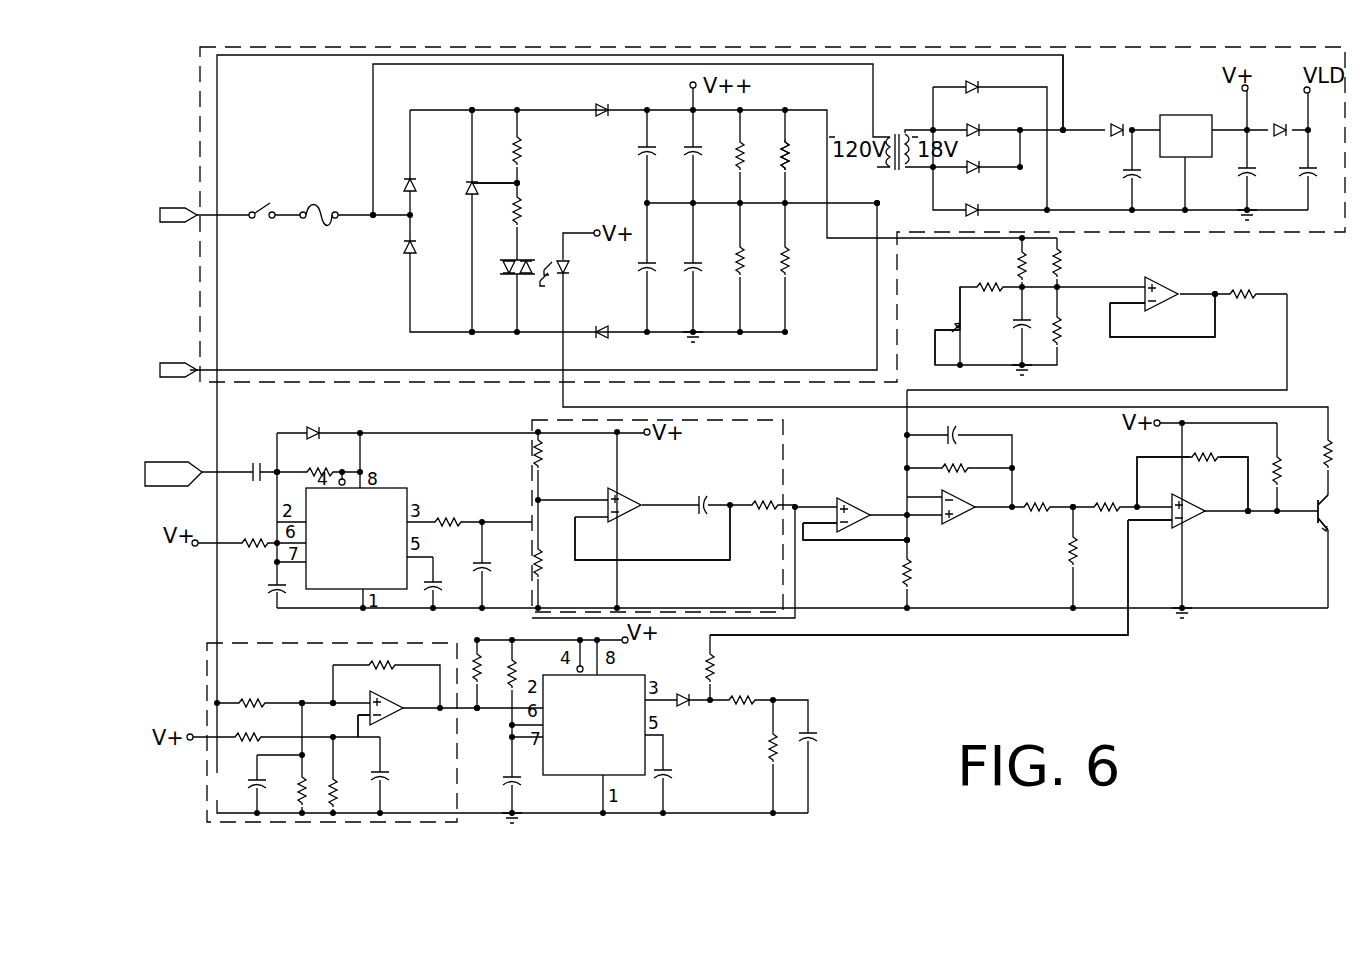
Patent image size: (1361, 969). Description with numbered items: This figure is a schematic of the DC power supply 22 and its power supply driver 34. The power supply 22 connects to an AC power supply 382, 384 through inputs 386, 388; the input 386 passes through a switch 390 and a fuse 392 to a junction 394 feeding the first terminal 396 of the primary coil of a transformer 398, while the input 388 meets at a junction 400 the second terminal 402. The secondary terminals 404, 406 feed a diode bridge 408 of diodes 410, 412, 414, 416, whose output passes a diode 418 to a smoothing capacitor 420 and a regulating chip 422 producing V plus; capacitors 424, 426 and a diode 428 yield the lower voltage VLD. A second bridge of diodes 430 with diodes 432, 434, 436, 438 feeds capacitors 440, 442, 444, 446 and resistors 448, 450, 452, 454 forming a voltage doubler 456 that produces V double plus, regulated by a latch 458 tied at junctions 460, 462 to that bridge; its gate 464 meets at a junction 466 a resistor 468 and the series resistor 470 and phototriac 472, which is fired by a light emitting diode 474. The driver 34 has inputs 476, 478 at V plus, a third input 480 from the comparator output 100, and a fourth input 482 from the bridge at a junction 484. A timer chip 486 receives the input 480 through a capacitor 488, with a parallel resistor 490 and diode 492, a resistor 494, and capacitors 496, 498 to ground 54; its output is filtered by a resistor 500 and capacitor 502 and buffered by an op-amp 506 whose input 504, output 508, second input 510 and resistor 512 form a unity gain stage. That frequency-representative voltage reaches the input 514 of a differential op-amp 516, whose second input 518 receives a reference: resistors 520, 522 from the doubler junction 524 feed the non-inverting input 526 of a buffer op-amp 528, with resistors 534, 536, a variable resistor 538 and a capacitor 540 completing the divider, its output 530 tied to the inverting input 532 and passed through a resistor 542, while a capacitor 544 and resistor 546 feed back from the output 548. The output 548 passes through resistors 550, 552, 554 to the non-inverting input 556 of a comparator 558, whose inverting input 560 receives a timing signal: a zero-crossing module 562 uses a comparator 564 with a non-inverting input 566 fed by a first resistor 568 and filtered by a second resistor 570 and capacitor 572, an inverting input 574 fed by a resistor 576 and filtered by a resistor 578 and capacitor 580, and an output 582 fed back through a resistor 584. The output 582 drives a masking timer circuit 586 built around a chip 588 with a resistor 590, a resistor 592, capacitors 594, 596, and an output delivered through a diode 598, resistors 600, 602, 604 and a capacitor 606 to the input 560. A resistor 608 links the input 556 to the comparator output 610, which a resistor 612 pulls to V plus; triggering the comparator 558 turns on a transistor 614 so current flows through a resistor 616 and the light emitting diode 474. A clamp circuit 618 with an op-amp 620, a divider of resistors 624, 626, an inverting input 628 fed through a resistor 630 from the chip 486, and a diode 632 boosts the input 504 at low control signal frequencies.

The power supply 22 is at (1220, 240).
The power supply driver 34 is at (1143, 680).
The ground 54 is at (1190, 613).
The output of the comparator 100 is at (176, 462).
The AC power supply line 382 is at (140, 215).
The AC power supply line 384 is at (140, 370).
The input 386 is at (192, 212).
The second input 388 is at (187, 368).
The switch 390 is at (264, 204).
The fuse 392 is at (318, 204).
The junction 394 is at (372, 223).
The first terminal of the primary coil 396 is at (872, 113).
The transformer 398 is at (887, 121).
The junction 400 is at (877, 203).
The second terminal of the primary coil 402 is at (877, 187).
The first terminal of the secondary coil 404 is at (915, 130).
The second terminal of the secondary coil 406 is at (885, 178).
The diode bridge 408 is at (1063, 72).
The diode 410 is at (977, 88).
The diode 412 is at (977, 128).
The diode 414 is at (977, 164).
The diode 416 is at (978, 210).
The diode 418 is at (1114, 130).
The capacitor 420 is at (1125, 174).
The chip 422 is at (1188, 115).
The capacitor 424 is at (1252, 174).
The capacitor 426 is at (1305, 180).
The diode 428 is at (1274, 124).
The second bridge of diodes 430 is at (520, 108).
The diode 432 is at (413, 180).
The diode 434 is at (412, 249).
The diode 436 is at (598, 115).
The diode 438 is at (600, 326).
The capacitor 440 is at (645, 152).
The capacitor 442 is at (643, 260).
The capacitor 444 is at (692, 155).
The capacitor 446 is at (691, 263).
The resistor 448 is at (737, 152).
The resistor 450 is at (738, 258).
The resistor 452 is at (782, 152).
The resistor 454 is at (783, 258).
The voltage doubler 456 is at (763, 96).
The latch 458 is at (476, 180).
The junction 460 is at (476, 99).
The junction 462 is at (468, 330).
The gate 464 is at (488, 184).
The junction 466 is at (522, 183).
The resistor 468 is at (521, 149).
The resistor 470 is at (523, 210).
The phototriac 472 is at (508, 262).
The light emitting diode 474 is at (569, 265).
The first input 476 is at (230, 543).
The second input 478 is at (205, 733).
The third input 480 is at (250, 460).
The fourth input 482 is at (243, 700).
The junction 484 is at (1073, 122).
The chip 486 is at (403, 497).
The capacitor 488 is at (273, 467).
The resistor 490 is at (312, 472).
The diode 492 is at (317, 431).
The resistor 494 is at (260, 551).
The capacitor 496 is at (270, 587).
The capacitor 498 is at (437, 580).
The resistor 500 is at (457, 522).
The capacitor 502 is at (487, 563).
The input of the op-amp 504 is at (812, 507).
The op-amp 506 is at (852, 520).
The output 508 is at (905, 507).
The second input 510 is at (817, 540).
The resistor 512 is at (909, 575).
The input 514 is at (925, 530).
The op-amp 516 is at (970, 520).
The second input 518 is at (930, 490).
The resistor 520 is at (1017, 264).
The resistor 522 is at (1058, 265).
The junction 524 is at (808, 126).
The non-inverting input 526 is at (1106, 287).
The op-amp 528 is at (1213, 294).
The output 530 is at (1240, 294).
The inverting input 532 is at (1123, 314).
The resistor 534 is at (980, 284).
The resistor 536 is at (1058, 328).
The variable resistor 538 is at (960, 330).
The capacitor 540 is at (1018, 323).
The resistor 542 is at (1271, 294).
The capacitor 544 is at (960, 435).
The resistor 546 is at (960, 467).
The output 548 is at (1032, 506).
The resistor 550 is at (1070, 510).
The resistor 552 is at (1102, 506).
The resistor 554 is at (1073, 554).
The non-inverting input 556 is at (1150, 506).
The comparator 558 is at (1193, 519).
The inverting input 560 is at (1150, 522).
The zero-crossing module 562 is at (198, 662).
The comparator 564 is at (395, 717).
The non-inverting input 566 is at (338, 702).
The first resistor 568 is at (300, 702).
The second resistor 570 is at (300, 786).
The capacitor 572 is at (253, 777).
The inverting input 574 is at (355, 721).
The resistor 576 is at (252, 737).
The resistor 578 is at (335, 778).
The capacitor 580 is at (388, 777).
The output 582 is at (477, 713).
The resistor 584 is at (395, 665).
The masking timer circuit 586 is at (740, 820).
The chip 588 is at (630, 680).
The resistor 590 is at (477, 655).
The resistor 592 is at (514, 680).
The capacitor 594 is at (520, 785).
The capacitor 596 is at (675, 774).
The diode 598 is at (680, 700).
The resistor 600 is at (716, 670).
The resistor 602 is at (754, 697).
The resistor 604 is at (770, 748).
The capacitor 606 is at (818, 741).
The resistor 608 is at (1205, 457).
The output 610 is at (1253, 513).
The resistor 612 is at (1277, 480).
The transistor 614 is at (1312, 527).
The resistor 616 is at (1323, 450).
The clamp circuit 618 is at (532, 420).
The op-amp 620 is at (635, 497).
The resistor 624 is at (541, 468).
The resistor 626 is at (563, 498).
The inverting input 628 is at (585, 519).
The resistor 630 is at (760, 502).
The diode 632 is at (700, 496).